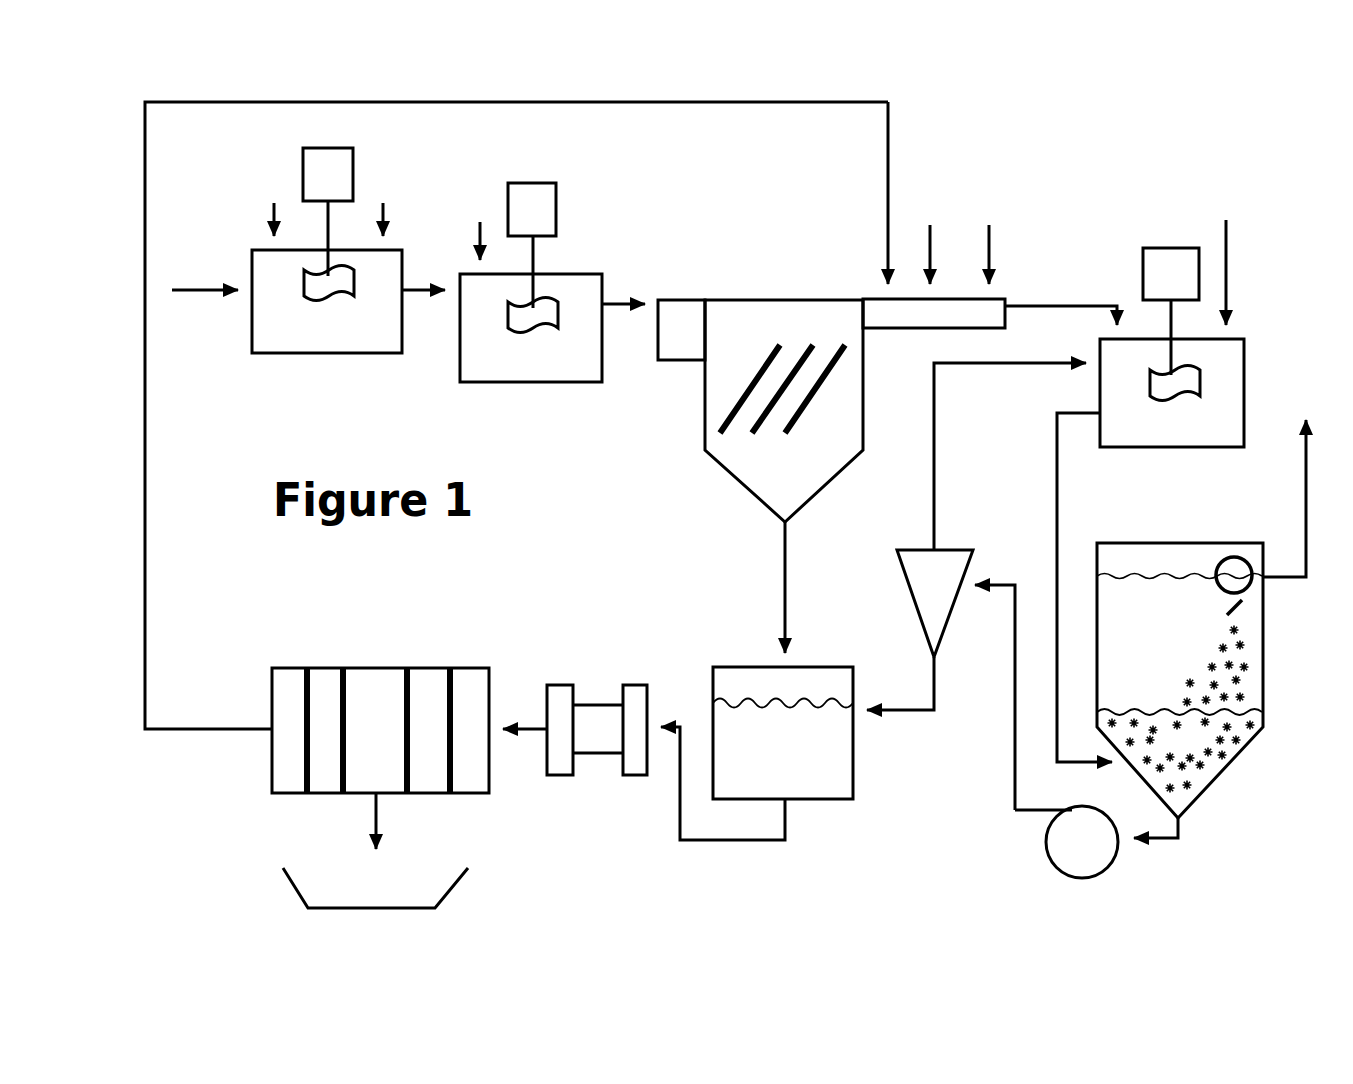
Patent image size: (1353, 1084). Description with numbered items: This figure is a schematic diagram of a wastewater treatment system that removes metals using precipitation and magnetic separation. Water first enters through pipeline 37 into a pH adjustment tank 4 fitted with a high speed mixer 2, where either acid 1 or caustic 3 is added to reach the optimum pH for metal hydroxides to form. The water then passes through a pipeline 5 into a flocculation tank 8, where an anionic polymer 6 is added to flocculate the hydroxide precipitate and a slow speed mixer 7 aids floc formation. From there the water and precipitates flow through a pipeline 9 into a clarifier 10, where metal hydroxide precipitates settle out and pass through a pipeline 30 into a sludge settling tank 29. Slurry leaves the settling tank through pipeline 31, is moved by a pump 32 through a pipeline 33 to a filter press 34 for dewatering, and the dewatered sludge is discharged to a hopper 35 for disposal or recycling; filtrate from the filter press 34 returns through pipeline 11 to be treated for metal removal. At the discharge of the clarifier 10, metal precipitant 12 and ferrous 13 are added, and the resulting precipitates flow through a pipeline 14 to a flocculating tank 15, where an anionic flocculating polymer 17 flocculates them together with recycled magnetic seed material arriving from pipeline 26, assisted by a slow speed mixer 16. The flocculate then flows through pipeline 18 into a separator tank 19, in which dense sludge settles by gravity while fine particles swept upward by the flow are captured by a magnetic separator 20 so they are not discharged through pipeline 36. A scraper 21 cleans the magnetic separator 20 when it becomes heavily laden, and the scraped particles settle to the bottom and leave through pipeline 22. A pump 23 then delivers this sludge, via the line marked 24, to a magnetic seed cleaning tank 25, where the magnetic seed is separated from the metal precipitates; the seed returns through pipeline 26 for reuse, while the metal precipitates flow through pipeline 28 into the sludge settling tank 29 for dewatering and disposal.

The acid 1 is at (274, 200).
The high speed mixer 2 is at (328, 212).
The caustic 3 is at (383, 200).
The pH adjustment tank 4 is at (327, 301).
The pipeline 5 is at (419, 308).
The anionic polymer 6 is at (480, 219).
The slow speed mixer 7 is at (532, 245).
The flocculation tank 8 is at (531, 328).
The pipeline 9 is at (624, 292).
The clarifier 10 is at (760, 411).
The pipeline 11 is at (730, 113).
The metal precipitant 12 is at (934, 257).
The ferrous 13 is at (989, 235).
The pipeline 14 is at (1072, 290).
The flocculating tank 15 is at (1172, 393).
The slow speed mixer 16 is at (1171, 311).
The anionic flocculating polymer 17 is at (1224, 246).
The pipeline 18 is at (1046, 546).
The separator tank 19 is at (1180, 680).
The magnetic separator 20 is at (1212, 557).
The scraper 21 is at (1248, 614).
The pipeline 22 is at (1164, 852).
The pump 23 is at (1082, 842).
The pump discharge line 24 is at (995, 800).
The magnetic seed cleaning tank 25 is at (935, 603).
The pipeline 26 is at (919, 451).
The pipeline 28 is at (920, 722).
The sludge settling tank 29 is at (783, 733).
The pipeline 30 is at (770, 572).
The pipeline 31 is at (727, 853).
The pump 32 is at (597, 730).
The pipeline 33 is at (526, 747).
The filter press 34 is at (380, 730).
The hopper 35 is at (375, 850).
The pipeline 36 is at (1294, 503).
The pipeline 37 is at (189, 304).